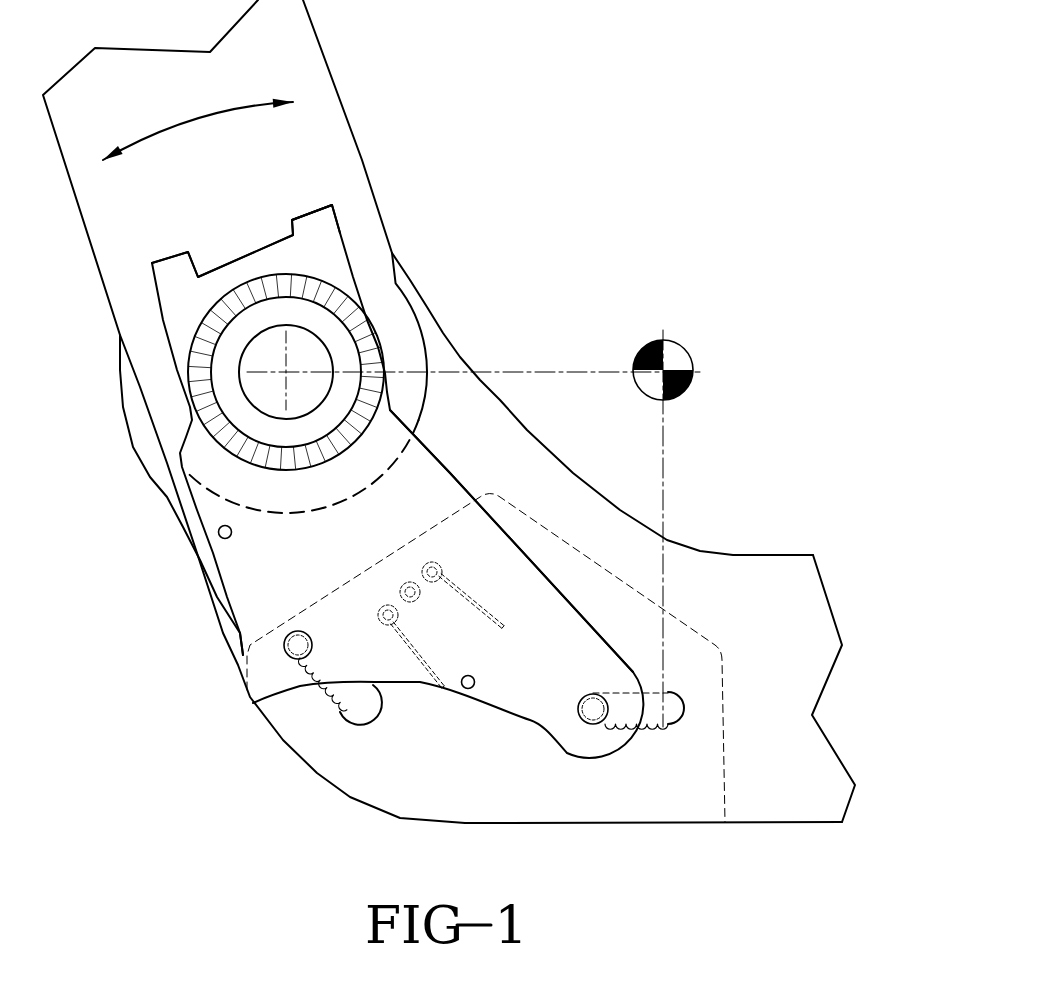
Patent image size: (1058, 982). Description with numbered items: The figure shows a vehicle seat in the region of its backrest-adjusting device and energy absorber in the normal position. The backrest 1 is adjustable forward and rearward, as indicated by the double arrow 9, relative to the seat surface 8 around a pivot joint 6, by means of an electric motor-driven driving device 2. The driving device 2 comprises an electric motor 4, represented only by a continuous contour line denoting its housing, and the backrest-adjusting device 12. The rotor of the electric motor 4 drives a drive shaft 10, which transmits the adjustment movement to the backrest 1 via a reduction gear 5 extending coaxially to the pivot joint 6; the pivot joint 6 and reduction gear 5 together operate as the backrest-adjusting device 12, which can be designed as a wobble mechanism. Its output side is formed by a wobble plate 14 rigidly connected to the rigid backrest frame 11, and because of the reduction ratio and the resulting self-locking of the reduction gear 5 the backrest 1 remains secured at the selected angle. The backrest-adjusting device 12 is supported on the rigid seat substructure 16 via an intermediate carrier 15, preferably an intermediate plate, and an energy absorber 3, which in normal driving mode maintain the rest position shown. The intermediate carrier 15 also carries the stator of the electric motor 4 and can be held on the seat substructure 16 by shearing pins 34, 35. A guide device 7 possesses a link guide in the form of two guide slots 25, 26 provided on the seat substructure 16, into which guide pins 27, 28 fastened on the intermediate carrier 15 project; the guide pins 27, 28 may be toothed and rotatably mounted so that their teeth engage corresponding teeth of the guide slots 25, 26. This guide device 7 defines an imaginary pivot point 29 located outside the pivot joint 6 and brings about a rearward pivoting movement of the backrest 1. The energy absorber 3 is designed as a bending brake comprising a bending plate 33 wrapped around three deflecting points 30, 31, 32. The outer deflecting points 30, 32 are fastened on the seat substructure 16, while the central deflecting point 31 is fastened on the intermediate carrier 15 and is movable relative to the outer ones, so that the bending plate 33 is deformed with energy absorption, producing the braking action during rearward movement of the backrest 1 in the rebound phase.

The backrest 1 is at (274, 158).
The driving device 2 is at (242, 250).
The energy absorber 3 is at (432, 623).
The electric motor 4 is at (323, 277).
The reduction gear 5 is at (342, 363).
The pivot joint 6 is at (290, 374).
The guide device 7 is at (397, 752).
The seat surface 8 is at (783, 555).
The double arrow 9 is at (197, 118).
The drive shaft 10 is at (325, 343).
The rigid backrest frame 11 is at (335, 88).
The backrest-adjusting device 12 is at (222, 500).
The wobble plate 14 is at (317, 223).
The intermediate carrier 15 is at (423, 502).
The seat substructure 16 is at (480, 790).
The guide slot 25 is at (362, 712).
The guide slot 26 is at (672, 712).
The guide pin 27 is at (300, 645).
The guide pin 28 is at (593, 712).
The imaginary pivot point 29 is at (665, 367).
The deflecting point 30 is at (435, 573).
The central deflecting point 31 is at (400, 585).
The deflecting point 32 is at (388, 618).
The bending plate 33 is at (502, 622).
The shearing pin 34 is at (225, 539).
The shearing pin 35 is at (462, 690).